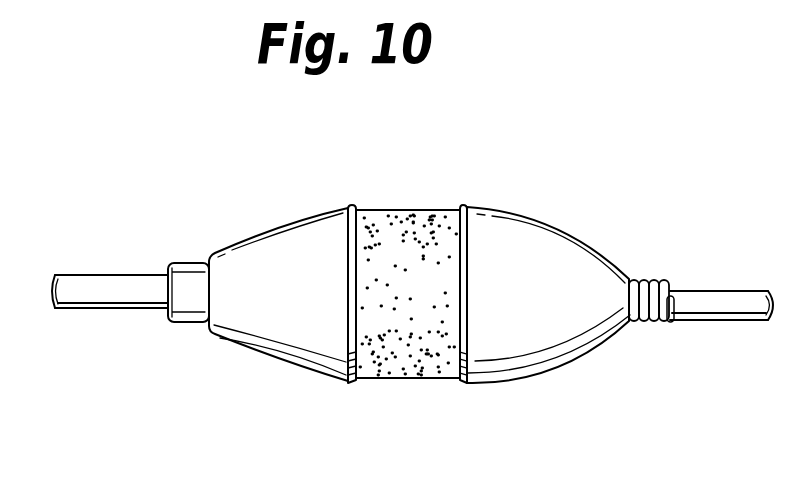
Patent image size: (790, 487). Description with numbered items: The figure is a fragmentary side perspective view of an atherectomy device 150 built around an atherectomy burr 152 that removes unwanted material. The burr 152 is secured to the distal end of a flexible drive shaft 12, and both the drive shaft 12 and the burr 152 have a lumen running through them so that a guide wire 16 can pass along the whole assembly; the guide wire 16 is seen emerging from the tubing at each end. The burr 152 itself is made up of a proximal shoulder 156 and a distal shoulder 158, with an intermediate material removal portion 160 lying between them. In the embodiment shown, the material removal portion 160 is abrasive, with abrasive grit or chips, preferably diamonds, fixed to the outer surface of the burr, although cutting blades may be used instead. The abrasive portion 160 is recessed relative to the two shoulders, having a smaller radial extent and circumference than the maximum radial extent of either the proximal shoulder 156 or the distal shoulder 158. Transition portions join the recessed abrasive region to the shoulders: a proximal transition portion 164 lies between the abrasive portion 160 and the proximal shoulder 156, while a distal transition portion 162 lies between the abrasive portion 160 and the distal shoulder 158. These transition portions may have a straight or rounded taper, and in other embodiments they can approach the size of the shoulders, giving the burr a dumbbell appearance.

The atherectomy device 150 is at (559, 188).
The atherectomy burr 152 is at (425, 188).
The proximal shoulder 156 is at (557, 231).
The distal shoulder 158 is at (277, 224).
The material removal portion 160 is at (413, 380).
The distal transition portion 162 is at (462, 383).
The proximal transition portion 164 is at (358, 383).
The flexible drive shaft 12 is at (705, 292).
The guide wire 16 is at (113, 297).